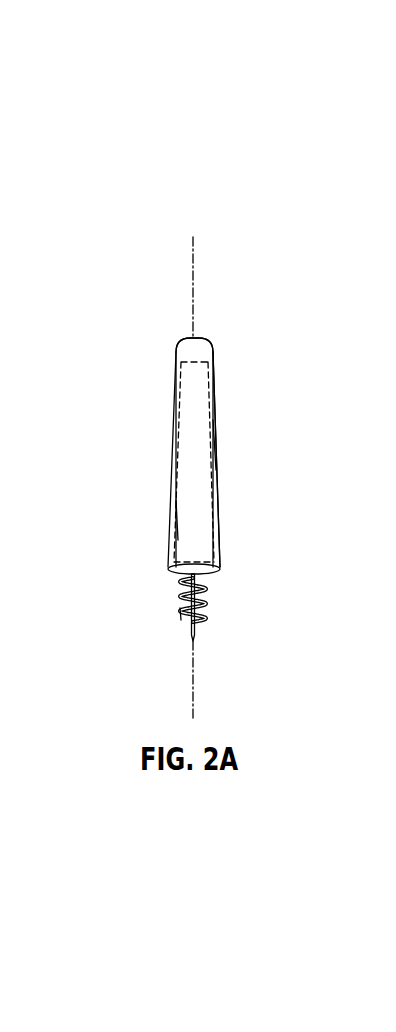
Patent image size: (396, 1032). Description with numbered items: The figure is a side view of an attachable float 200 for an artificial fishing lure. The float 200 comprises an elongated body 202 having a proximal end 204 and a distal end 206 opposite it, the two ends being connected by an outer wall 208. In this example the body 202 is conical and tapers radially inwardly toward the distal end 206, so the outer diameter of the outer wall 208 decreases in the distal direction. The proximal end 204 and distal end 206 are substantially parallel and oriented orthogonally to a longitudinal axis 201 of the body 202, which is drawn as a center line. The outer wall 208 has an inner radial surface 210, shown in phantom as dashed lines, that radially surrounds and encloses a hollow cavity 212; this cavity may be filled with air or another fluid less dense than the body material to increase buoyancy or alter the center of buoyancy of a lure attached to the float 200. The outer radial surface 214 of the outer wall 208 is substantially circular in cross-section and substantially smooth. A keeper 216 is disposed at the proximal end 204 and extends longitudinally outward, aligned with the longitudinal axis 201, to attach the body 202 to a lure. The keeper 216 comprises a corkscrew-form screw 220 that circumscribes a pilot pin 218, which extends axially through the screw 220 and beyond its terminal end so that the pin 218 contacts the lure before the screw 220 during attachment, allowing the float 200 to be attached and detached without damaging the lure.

The attachable float 200 is at (236, 286).
The longitudinal axis 201 is at (192, 257).
The elongated body 202 is at (220, 364).
The proximal end 204 is at (211, 580).
The distal end 206 is at (188, 338).
The outer wall 208 is at (213, 397).
The inner radial surface 210 is at (208, 437).
The hollow cavity 212 is at (198, 535).
The outer radial surface 214 is at (214, 445).
The keeper 216 is at (174, 596).
The pilot pin 218 is at (197, 642).
The screw 220 is at (180, 622).